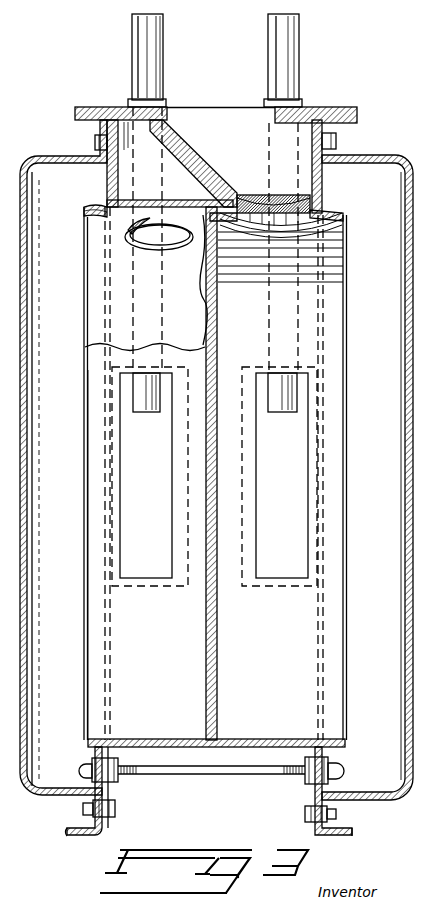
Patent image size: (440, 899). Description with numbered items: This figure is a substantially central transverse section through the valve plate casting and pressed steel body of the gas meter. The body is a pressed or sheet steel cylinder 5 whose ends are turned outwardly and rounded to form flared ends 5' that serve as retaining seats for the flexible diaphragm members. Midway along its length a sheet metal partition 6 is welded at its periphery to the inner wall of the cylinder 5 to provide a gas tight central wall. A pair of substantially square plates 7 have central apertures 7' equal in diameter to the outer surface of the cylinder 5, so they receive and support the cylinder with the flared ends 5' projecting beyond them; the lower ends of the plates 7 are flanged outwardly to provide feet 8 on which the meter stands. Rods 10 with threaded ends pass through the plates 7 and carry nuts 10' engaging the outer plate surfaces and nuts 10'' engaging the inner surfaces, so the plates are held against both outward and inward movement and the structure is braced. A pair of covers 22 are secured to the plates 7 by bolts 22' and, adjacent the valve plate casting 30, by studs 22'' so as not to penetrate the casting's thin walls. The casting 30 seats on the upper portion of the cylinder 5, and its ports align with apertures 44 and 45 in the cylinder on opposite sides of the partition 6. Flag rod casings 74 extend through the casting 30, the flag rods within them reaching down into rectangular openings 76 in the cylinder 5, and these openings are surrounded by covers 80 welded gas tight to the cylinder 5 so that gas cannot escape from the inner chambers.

The cylinder 5 is at (227, 473).
The flared ends 5' is at (215, 476).
The partition 6 is at (222, 621).
The plates 7 is at (217, 777).
The central apertures 7' is at (218, 190).
The feet 8 is at (70, 836).
The rods 10 is at (211, 792).
The nuts 10' is at (207, 780).
The nuts 10'' is at (210, 785).
The covers 22 is at (206, 460).
The bolts 22' is at (209, 819).
The studs 22'' is at (218, 142).
The valve plate casting 30 is at (205, 172).
The aperture 44 is at (142, 242).
The aperture 45 is at (346, 226).
The flag rod casings 74 is at (275, 70).
The rectangular opening 76 is at (138, 498).
The covers 80 is at (112, 453).